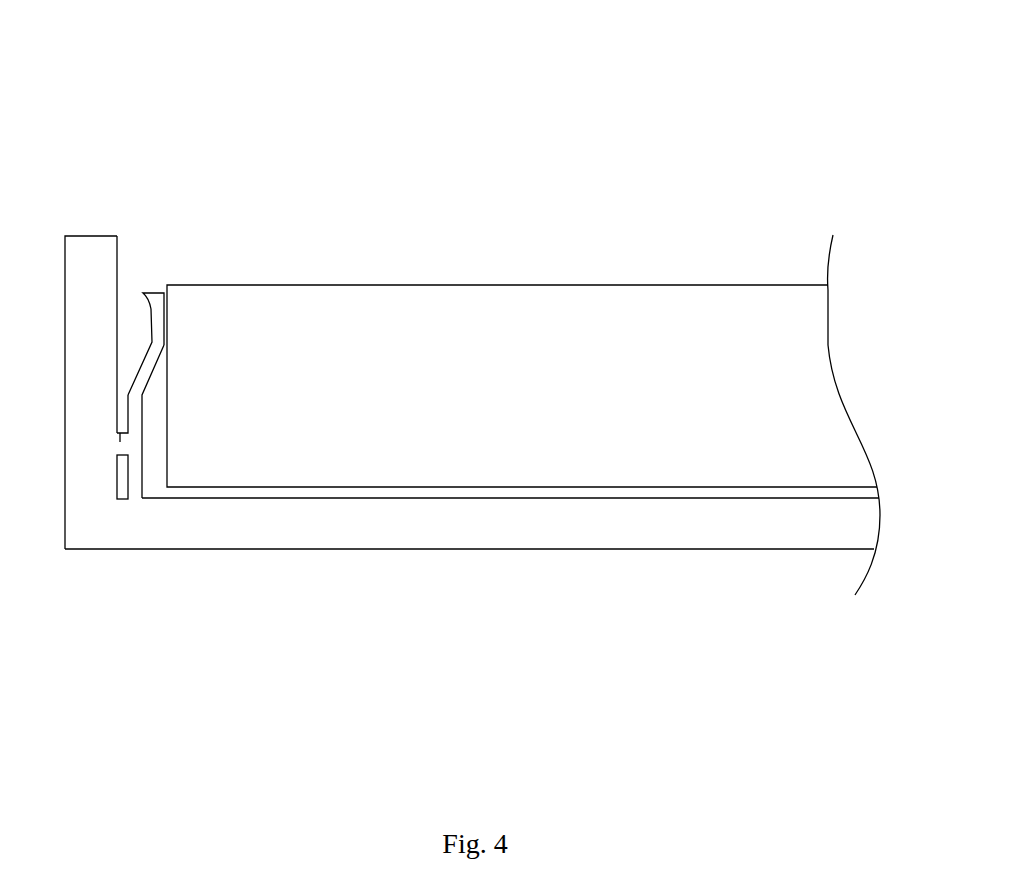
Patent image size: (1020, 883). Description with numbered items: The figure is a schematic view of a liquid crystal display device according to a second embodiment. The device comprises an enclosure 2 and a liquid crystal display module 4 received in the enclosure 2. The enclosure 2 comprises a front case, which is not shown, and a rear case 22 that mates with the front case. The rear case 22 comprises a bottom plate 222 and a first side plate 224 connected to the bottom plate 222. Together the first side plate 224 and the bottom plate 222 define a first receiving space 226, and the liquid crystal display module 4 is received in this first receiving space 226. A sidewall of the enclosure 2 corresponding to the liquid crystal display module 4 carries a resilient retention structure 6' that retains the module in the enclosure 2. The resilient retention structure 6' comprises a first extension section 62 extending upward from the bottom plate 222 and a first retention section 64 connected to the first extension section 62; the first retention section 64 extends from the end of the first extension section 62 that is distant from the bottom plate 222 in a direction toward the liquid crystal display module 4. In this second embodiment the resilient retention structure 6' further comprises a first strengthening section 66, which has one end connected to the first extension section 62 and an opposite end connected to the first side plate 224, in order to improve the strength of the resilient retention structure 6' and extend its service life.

The enclosure 2 is at (462, 499).
The rear case 22 is at (461, 500).
The bottom plate 222 is at (292, 525).
The first side plate 224 is at (83, 353).
The first receiving space 226 is at (587, 492).
The liquid crystal display module 4 is at (529, 343).
The resilient retention structure 6' is at (285, 254).
The first extension section 62 is at (137, 445).
The first retention section 64 is at (147, 367).
The first strengthening section 66 is at (121, 400).